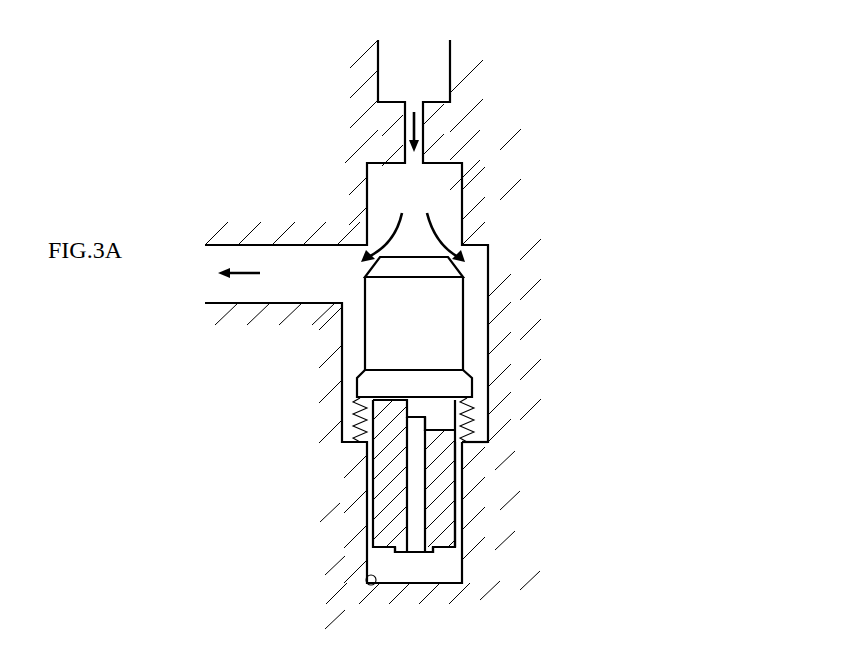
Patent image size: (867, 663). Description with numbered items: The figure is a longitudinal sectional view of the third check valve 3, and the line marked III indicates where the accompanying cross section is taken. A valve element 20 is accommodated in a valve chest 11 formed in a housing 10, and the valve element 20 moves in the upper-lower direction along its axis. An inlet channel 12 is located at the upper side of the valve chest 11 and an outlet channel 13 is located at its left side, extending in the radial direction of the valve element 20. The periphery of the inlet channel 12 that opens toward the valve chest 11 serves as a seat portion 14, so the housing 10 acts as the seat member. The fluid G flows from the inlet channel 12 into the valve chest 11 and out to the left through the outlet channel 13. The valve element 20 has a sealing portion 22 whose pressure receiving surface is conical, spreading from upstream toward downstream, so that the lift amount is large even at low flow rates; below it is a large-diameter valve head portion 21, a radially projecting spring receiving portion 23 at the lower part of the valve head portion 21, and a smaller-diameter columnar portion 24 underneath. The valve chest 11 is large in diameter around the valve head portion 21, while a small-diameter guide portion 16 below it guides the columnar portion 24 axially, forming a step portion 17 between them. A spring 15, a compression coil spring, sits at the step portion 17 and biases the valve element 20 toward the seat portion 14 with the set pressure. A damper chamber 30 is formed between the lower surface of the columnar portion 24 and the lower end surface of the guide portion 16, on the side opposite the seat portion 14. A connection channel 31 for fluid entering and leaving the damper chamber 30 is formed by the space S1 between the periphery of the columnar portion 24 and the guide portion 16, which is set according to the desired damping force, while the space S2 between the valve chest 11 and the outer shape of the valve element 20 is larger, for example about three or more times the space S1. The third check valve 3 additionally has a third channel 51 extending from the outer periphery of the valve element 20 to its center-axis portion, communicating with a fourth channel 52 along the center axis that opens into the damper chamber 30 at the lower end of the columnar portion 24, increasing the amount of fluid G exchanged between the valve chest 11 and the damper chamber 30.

The third check valve 3 is at (607, 180).
The housing 10 is at (548, 381).
The valve chest 11 is at (476, 317).
The inlet channel 12 is at (430, 196).
The outlet channel 13 is at (292, 262).
The seat portion 14 is at (452, 226).
The spring 15 is at (477, 431).
The guide portion 16 is at (377, 582).
The step portion 17 is at (360, 442).
The valve element 20 is at (441, 511).
The valve head portion 21 is at (422, 335).
The sealing portion 22 is at (448, 268).
The spring receiving portion 23 is at (467, 410).
The columnar portion 24 is at (445, 485).
The damper chamber 30 is at (437, 577).
The connection channel 31 is at (466, 527).
The third channel 51 is at (437, 423).
The fourth channel 52 is at (412, 493).
The fluid G is at (387, 258).
The space S1 is at (437, 470).
The space S2 is at (385, 343).
The line III- III is at (567, 500).